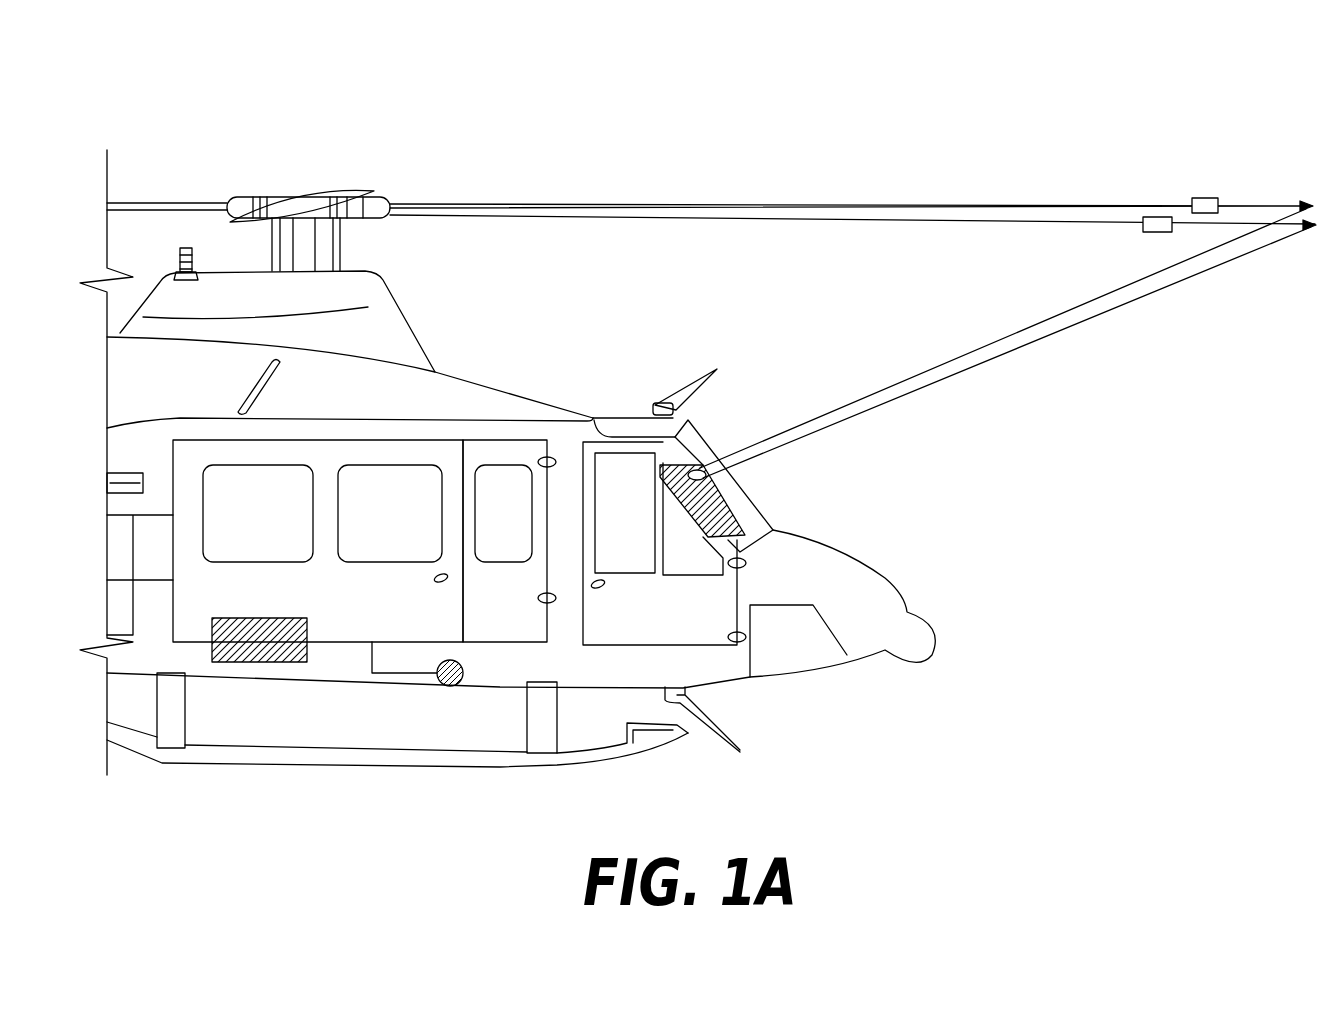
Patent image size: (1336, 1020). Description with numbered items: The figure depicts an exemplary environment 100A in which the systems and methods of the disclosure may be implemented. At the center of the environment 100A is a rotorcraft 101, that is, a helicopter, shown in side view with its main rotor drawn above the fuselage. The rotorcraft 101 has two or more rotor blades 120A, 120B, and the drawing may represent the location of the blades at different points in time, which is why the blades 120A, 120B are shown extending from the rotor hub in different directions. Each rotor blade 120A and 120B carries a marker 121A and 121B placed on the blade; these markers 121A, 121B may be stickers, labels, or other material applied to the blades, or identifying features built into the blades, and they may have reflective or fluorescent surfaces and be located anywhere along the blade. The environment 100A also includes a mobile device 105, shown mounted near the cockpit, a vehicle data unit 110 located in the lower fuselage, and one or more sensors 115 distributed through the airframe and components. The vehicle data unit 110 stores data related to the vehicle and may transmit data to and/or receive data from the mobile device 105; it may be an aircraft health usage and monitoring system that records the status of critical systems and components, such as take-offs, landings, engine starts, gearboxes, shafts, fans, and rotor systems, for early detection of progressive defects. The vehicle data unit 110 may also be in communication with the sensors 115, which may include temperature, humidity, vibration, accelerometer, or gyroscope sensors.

The environment 100A is at (1152, 69).
The rotorcraft 101 is at (753, 677).
The mobile device 105 is at (733, 507).
The vehicle data unit 110 is at (262, 662).
The sensors 115 is at (437, 687).
The rotor blade 120A is at (1233, 203).
The rotor blade 120B is at (1222, 227).
The marker 121A is at (1205, 198).
The marker 121B is at (1157, 232).